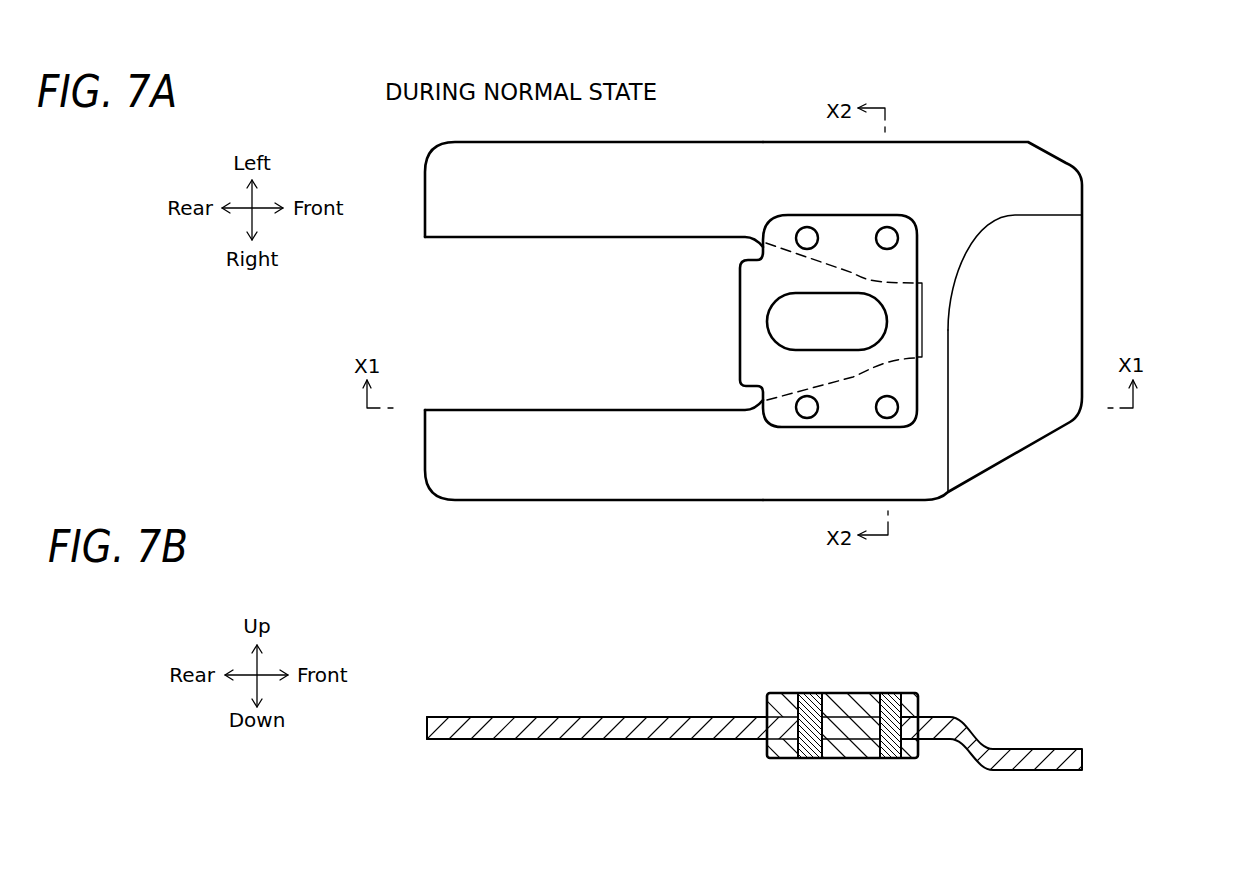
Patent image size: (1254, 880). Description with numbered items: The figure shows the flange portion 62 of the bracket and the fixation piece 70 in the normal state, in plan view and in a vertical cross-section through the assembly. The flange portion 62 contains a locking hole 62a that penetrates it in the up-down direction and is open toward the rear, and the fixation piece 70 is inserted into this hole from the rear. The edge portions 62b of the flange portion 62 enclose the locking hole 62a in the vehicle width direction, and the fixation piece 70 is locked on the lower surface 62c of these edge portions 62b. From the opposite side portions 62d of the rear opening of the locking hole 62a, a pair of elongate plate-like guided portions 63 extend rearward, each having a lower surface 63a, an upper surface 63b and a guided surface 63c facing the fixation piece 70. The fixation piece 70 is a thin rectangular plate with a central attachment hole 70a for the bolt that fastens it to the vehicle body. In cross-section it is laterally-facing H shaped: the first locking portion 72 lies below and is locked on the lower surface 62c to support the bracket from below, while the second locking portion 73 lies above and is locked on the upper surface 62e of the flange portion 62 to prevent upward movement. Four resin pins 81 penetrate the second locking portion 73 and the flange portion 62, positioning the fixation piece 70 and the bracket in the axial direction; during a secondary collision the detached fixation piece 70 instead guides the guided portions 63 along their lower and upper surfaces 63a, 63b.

In FIG. 7A, the flange portion 62 is at (1077, 547).
In FIG. 7B, the flange portion 62 is at (945, 727).
In FIG. 7A, the locking hole 62a is at (853, 273).
In FIG. 7A, the edge portion 62b is at (863, 258).
In FIG. 7B, the edge portion 62b is at (773, 727).
In FIG. 7B, the lower surface 62c is at (779, 745).
In FIG. 7A, the side portion 62d is at (757, 190).
In FIG. 7B, the upper surface 62e is at (790, 710).
In FIG. 7A, the guided portion 63 is at (437, 200).
In FIG. 7B, the guided portion 63 is at (437, 728).
In FIG. 7B, the lower surface 63a is at (532, 739).
In FIG. 7B, the upper surface 63b is at (532, 717).
In FIG. 7A, the guided surface 63c is at (505, 238).
In FIG. 7A, the fixation piece 70 is at (745, 306).
In FIG. 7B, the fixation piece 70 is at (847, 693).
In FIG. 7A, the attachment hole 70a is at (813, 347).
In FIG. 7B, the first locking portion 72 is at (920, 752).
In FIG. 7B, the second locking portion 73 is at (918, 705).
In FIG. 7A, the resin pin 81 is at (807, 238).
In FIG. 7B, the resin pin 81 is at (808, 702).